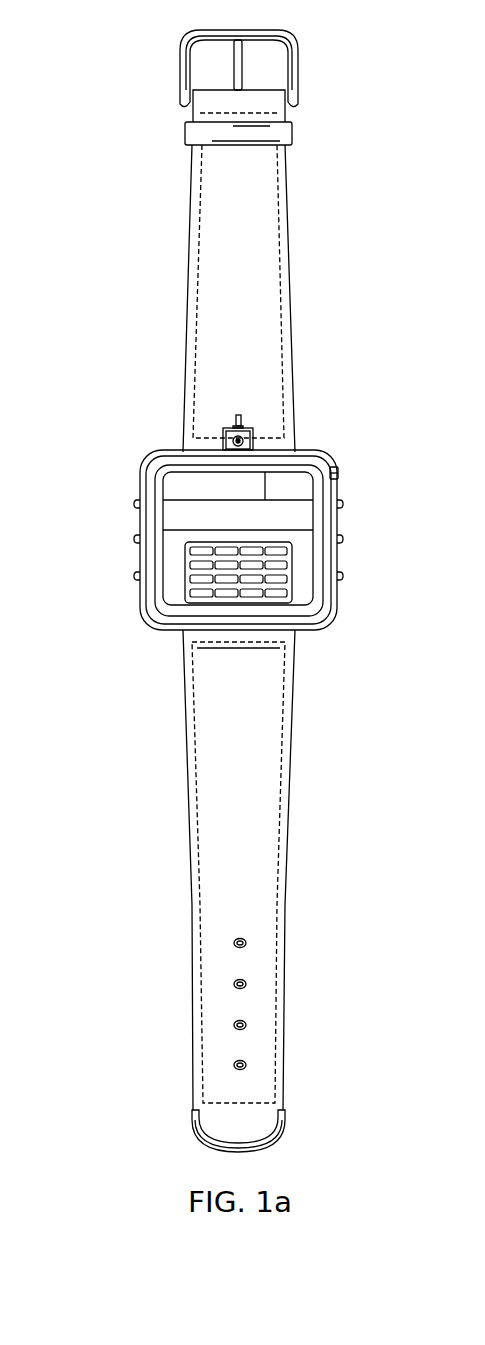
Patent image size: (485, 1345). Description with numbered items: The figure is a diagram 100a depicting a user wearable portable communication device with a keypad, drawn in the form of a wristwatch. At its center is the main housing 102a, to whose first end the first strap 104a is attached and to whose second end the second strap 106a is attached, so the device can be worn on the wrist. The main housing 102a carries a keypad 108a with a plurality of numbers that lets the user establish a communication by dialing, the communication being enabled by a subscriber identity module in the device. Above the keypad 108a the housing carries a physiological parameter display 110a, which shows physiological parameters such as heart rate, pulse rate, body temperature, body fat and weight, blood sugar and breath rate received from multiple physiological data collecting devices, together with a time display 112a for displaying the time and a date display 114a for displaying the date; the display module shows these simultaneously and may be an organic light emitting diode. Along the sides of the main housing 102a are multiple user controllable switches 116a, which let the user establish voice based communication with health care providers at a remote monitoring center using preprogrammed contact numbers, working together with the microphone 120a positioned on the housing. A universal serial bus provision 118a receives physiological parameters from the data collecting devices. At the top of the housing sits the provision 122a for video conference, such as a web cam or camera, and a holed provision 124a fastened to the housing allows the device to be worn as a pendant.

The diagram 100a is at (146, 47).
The main housing 102a is at (165, 450).
The first strap 104a is at (270, 221).
The second strap 106a is at (270, 803).
The keypad 108a is at (290, 596).
The physiological parameter display 110a is at (177, 507).
The time display 112a is at (272, 478).
The date display 114a is at (177, 478).
The user controllable switches 116a is at (126, 500).
The universal serial bus provision 118a is at (343, 550).
The microphone 120a is at (338, 474).
The provision for video conference 122a is at (255, 446).
The holed provision 124a is at (243, 418).